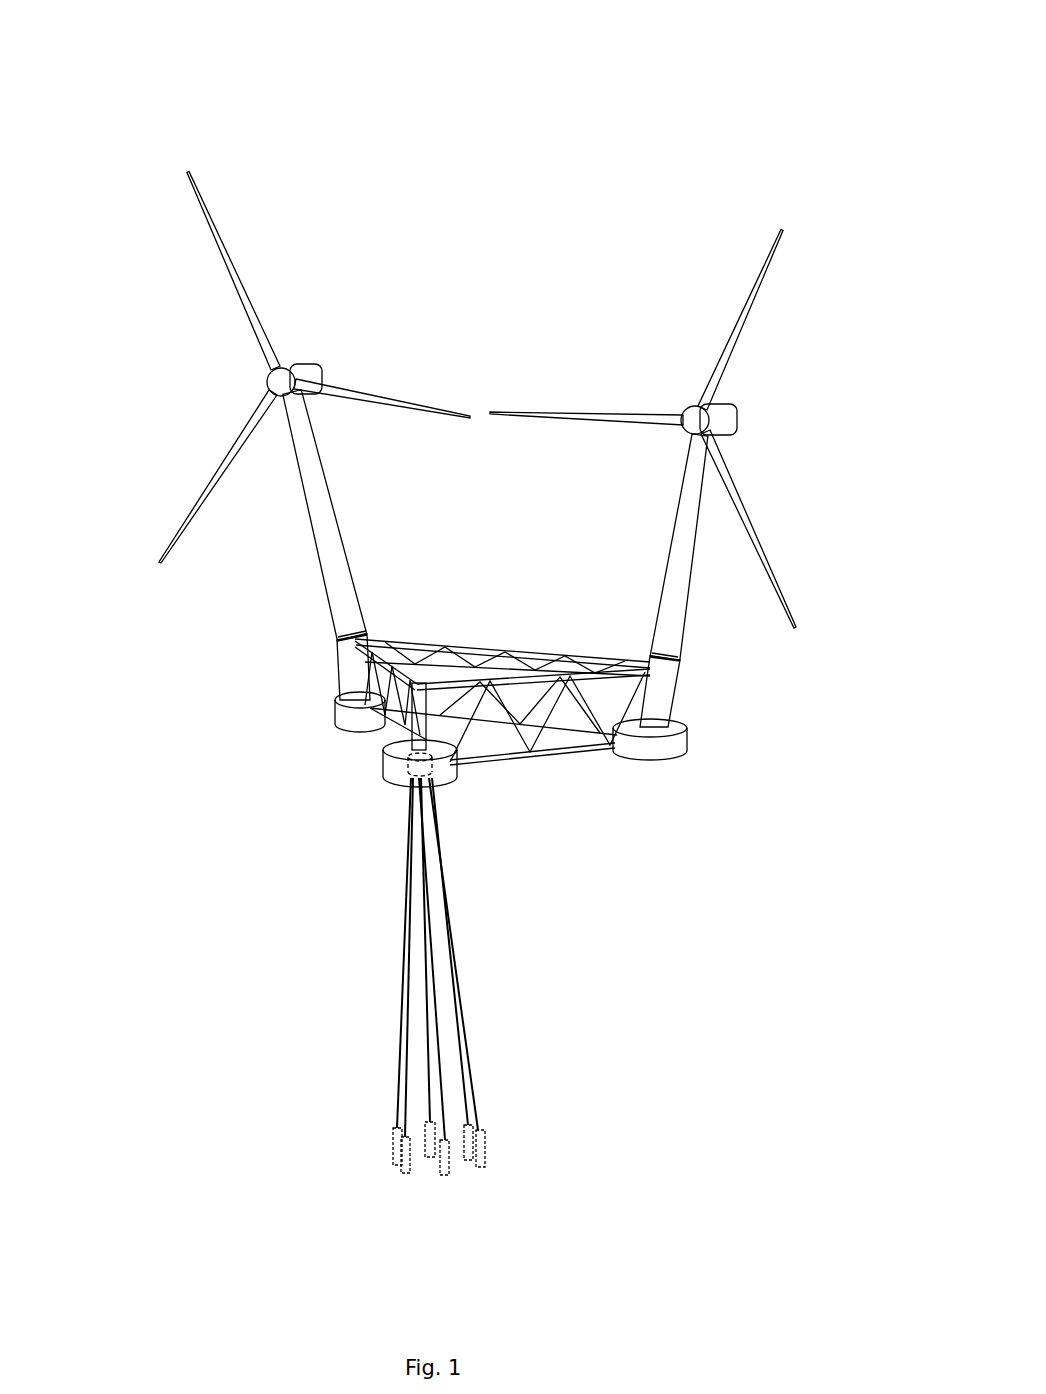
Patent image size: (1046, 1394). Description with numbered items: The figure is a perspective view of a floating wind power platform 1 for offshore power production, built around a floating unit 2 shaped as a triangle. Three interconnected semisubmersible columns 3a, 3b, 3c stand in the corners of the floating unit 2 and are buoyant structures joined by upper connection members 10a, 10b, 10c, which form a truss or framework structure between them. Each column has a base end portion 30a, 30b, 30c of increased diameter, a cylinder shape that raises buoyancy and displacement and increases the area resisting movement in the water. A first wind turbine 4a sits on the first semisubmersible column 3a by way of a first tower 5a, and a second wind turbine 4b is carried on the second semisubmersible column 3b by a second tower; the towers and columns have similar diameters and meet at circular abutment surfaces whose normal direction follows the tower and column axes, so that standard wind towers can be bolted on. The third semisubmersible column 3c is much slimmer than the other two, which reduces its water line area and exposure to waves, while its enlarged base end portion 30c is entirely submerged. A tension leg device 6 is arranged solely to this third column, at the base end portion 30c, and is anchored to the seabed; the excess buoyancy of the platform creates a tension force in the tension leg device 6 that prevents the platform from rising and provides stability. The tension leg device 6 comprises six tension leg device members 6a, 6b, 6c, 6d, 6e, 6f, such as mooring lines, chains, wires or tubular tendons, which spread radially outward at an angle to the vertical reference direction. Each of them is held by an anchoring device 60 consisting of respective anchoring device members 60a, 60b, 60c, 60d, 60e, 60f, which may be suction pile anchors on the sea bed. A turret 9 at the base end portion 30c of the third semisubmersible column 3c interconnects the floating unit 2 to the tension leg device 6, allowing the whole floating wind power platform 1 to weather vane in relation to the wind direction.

The floating wind power platform 1 is at (360, 110).
The floating unit 2 is at (178, 698).
The first semisubmersible column 3a is at (345, 663).
The second semisubmersible column 3b is at (672, 688).
The third semisubmersible column 3c is at (420, 732).
The first wind turbine 4a is at (305, 362).
The second wind turbine 4b is at (715, 405).
The first tower 5a is at (327, 578).
The tension leg device 6 is at (236, 925).
The tension leg device member 6a is at (405, 1057).
The tension leg device member 6b is at (460, 995).
The tension leg device member 6c is at (444, 1100).
The tension leg device member 6d is at (462, 1050).
The tension leg device member 6e is at (428, 1093).
The tension leg device member 6f is at (400, 1118).
The turret 9 is at (430, 770).
The upper connection member 10a is at (372, 612).
The upper connection member 10b is at (525, 650).
The upper connection member 10c is at (598, 665).
The base end portion of first semisubmersible column 30a is at (352, 723).
The base end portion of second semisubmersible column 30b is at (672, 748).
The base end portion of third semisubmersible column 30c is at (445, 772).
The anchoring device 60 is at (258, 1173).
The anchoring device member 60a is at (404, 1172).
The anchoring device member 60b is at (480, 1147).
The anchoring device member 60c is at (445, 1167).
The anchoring device member 60d is at (480, 1128).
The anchoring device member 60e is at (430, 1120).
The anchoring device member 60f is at (395, 1130).